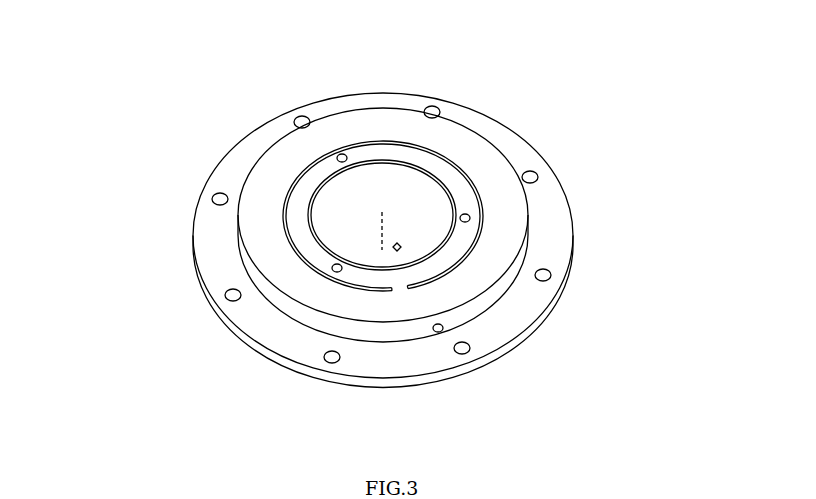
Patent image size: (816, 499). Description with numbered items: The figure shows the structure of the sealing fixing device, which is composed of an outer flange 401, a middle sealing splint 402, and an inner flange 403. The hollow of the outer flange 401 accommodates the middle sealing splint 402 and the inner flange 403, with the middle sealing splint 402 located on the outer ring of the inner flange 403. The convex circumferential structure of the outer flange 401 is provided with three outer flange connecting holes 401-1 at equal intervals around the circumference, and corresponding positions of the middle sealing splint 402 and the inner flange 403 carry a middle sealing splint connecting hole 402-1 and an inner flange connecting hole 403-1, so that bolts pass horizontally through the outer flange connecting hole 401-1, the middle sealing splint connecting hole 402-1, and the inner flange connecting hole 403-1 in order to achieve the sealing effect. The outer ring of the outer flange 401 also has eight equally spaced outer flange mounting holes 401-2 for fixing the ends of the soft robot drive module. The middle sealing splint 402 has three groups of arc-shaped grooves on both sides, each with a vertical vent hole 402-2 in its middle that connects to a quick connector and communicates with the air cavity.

The outer flange 401 is at (360, 308).
The outer flange connecting hole 401-1 is at (440, 330).
The outer flange mounting hole 401-2 is at (236, 300).
The middle sealing splint 402 is at (295, 201).
The middle sealing splint connecting hole 402-1 is at (410, 276).
The vent hole 402-2 is at (345, 150).
The inner flange 403 is at (358, 203).
The inner flange connecting hole 403-1 is at (400, 253).